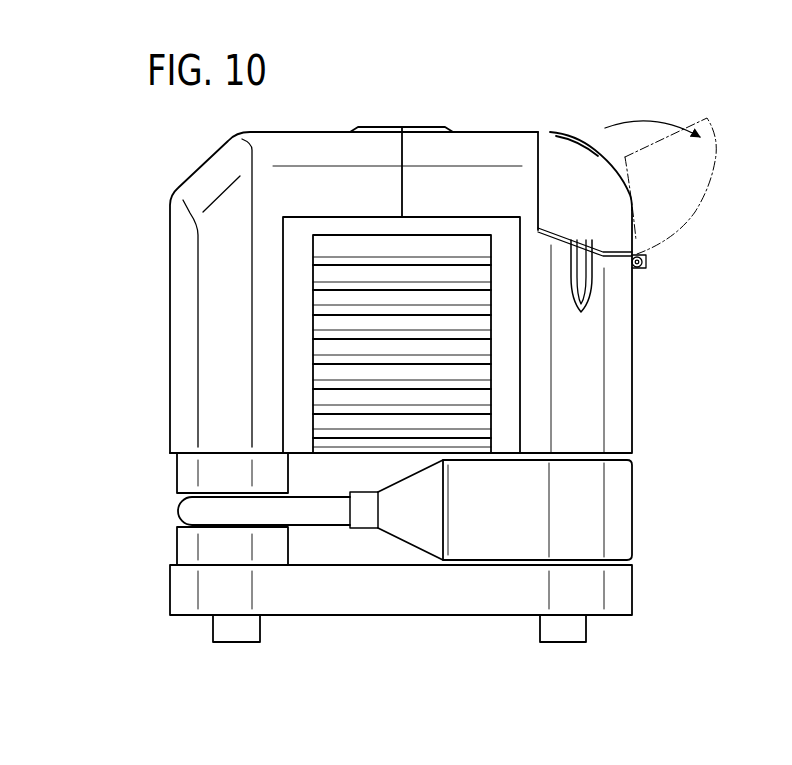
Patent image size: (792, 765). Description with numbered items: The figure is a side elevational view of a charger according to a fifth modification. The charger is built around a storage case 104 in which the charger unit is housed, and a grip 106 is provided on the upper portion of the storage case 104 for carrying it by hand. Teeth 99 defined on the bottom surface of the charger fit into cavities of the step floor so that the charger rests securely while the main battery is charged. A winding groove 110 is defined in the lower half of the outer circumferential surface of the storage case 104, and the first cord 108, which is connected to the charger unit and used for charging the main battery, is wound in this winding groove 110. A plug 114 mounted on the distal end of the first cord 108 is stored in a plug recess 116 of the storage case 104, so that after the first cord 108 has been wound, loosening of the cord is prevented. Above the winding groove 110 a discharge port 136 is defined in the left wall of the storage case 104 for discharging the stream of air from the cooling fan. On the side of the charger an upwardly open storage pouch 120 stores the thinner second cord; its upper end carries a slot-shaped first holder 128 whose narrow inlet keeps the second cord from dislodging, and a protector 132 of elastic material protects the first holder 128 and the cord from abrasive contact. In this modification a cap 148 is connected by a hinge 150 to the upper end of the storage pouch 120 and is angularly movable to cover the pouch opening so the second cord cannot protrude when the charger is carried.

The teeth 99 is at (237, 630).
The storage case 104 is at (494, 142).
The grip 106 is at (383, 130).
The first cord 108 is at (180, 508).
The winding groove 110 is at (166, 489).
The plug 114 is at (608, 506).
The plug recess 116 is at (637, 557).
The storage pouch 120 is at (619, 229).
The first holder 128 is at (581, 313).
The protector 132 is at (577, 242).
The discharge port 136 is at (332, 323).
The cap 148 is at (588, 148).
The hinge 150 is at (645, 263).